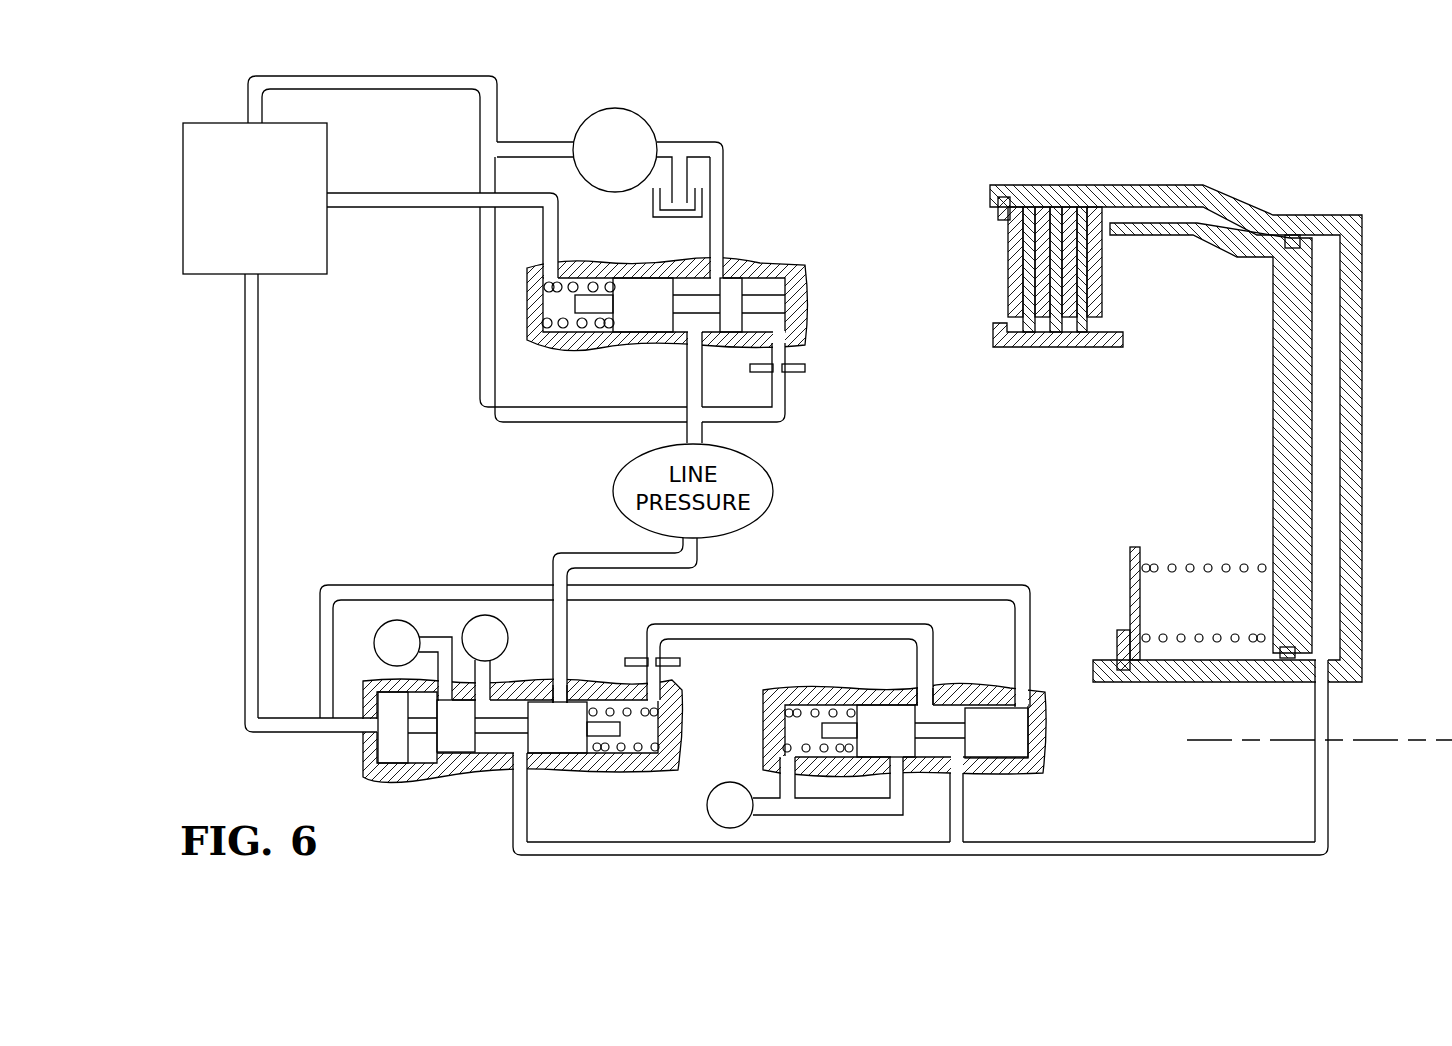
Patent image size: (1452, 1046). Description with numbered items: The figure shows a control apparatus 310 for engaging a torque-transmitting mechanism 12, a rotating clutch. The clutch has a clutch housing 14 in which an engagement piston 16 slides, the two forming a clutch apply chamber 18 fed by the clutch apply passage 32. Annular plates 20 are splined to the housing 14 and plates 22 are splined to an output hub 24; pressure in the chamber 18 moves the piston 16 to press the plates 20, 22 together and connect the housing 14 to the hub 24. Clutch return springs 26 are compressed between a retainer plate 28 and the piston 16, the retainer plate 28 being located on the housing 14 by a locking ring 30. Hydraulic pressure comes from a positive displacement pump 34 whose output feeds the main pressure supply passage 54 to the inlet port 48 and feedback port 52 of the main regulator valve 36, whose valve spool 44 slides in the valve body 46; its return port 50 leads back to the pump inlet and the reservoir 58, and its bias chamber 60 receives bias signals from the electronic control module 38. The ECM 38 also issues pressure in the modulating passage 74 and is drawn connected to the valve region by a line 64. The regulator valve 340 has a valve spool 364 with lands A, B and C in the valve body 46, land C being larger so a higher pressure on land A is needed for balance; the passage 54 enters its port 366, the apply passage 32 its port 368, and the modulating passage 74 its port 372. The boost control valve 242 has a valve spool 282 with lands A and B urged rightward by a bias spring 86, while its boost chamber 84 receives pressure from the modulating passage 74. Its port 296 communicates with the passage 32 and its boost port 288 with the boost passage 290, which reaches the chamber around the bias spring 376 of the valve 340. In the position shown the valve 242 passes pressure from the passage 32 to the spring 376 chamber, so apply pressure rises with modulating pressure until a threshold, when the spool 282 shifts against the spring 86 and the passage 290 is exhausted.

The electronic control module 38 is at (218, 110).
The positive displacement pump 34 is at (582, 108).
The reservoir 58 is at (686, 198).
The control apparatus 310 is at (796, 170).
The outlet or return port 50 is at (708, 276).
The electrical lead 64 is at (376, 192).
The main regulator valve 36 is at (742, 252).
The valve body 46 is at (787, 275).
The valve spool 44 is at (591, 305).
The bias chamber 60 is at (566, 332).
The inlet port 48 is at (683, 375).
The feedback port 52 is at (776, 345).
The main pressure supply passage 54 is at (480, 300).
The modulating passage 74 is at (245, 428).
The port 366 is at (552, 690).
The regulator valve 340 is at (457, 665).
The bias spring 376 is at (633, 714).
The port 372 is at (368, 725).
The valve spool 364 is at (422, 740).
The port 368 is at (520, 773).
The clutch apply passage 32 is at (580, 857).
The boost passage 290 is at (851, 623).
The boost port 288 is at (925, 700).
The boost control valve 242 is at (944, 672).
The boost chamber 84 is at (1030, 760).
The bias spring 86 is at (815, 712).
The valve spool 282 is at (940, 740).
The port 296 is at (958, 770).
The clutch housing 14 is at (1367, 230).
The torque-transmitting mechanism 12 is at (1322, 180).
The engagement piston 16 is at (1290, 340).
The clutch apply chamber 18 is at (1330, 412).
The annular plates 20 is at (1093, 207).
The plates 22 is at (1080, 332).
The output hub 24 is at (995, 335).
The clutch return springs 26 is at (1187, 563).
The retainer plate 28 is at (1130, 565).
The locking ring 30 is at (1117, 642).